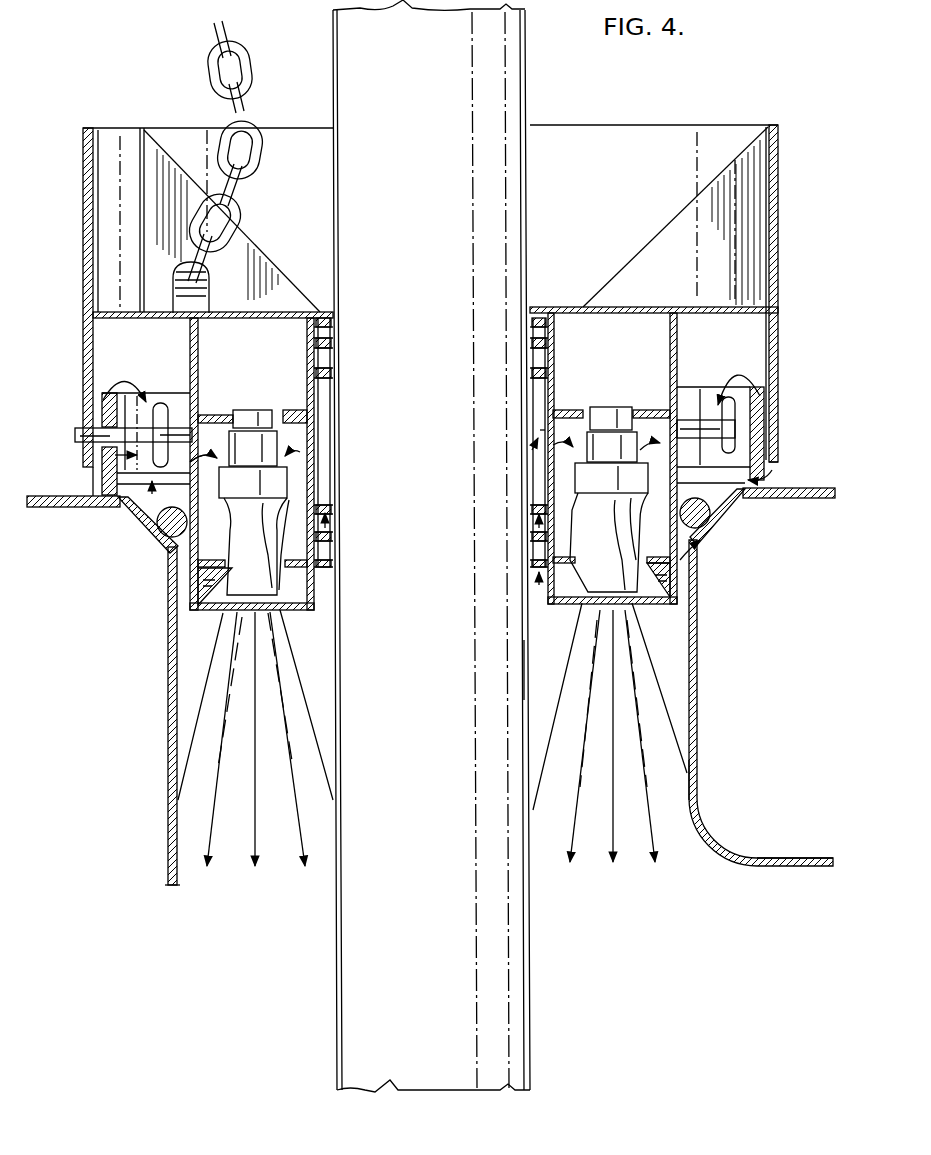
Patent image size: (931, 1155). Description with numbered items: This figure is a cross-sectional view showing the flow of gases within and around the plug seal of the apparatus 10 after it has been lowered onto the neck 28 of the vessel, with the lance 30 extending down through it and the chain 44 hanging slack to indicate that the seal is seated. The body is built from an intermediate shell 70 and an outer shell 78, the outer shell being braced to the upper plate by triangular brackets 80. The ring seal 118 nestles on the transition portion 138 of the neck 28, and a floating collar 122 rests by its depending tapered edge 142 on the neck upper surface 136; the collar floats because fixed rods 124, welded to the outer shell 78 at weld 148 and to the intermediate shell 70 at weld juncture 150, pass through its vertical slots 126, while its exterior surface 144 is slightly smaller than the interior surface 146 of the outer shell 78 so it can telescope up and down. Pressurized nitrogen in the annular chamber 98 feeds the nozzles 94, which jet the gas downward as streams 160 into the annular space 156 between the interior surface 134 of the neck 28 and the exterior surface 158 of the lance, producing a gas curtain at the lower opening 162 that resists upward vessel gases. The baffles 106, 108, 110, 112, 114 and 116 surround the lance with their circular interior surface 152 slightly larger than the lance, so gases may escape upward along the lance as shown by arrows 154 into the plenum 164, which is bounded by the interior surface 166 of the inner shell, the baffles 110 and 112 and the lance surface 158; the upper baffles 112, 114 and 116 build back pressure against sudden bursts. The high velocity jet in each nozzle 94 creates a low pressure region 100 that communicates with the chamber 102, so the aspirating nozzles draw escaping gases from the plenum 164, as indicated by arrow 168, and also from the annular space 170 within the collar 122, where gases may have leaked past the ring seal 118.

The pipe cleaning apparatus 10 is at (62, 262).
The neck 28 is at (158, 658).
The lance 30 is at (510, 98).
The chain 44 is at (246, 50).
The intermediate shell 70 is at (200, 372).
The outer shell 78 is at (776, 212).
The triangular bracket 80 is at (692, 215).
The nozzle 94 is at (620, 494).
The annular chamber 98 is at (650, 330).
The low pressure region 100 is at (620, 443).
The chamber 102 is at (215, 540).
The baffle 106 is at (318, 568).
The baffle 108 is at (322, 537).
The baffle 110 is at (320, 502).
The baffle 112 is at (323, 383).
The baffle 114 is at (324, 353).
The baffle 116 is at (322, 325).
The ring seal 118 is at (165, 527).
The floating collar 122 is at (768, 434).
The rod 124 is at (75, 442).
The slot 126 is at (102, 412).
The interior surface of the neck 134 is at (690, 638).
The neck upper surface 136 is at (62, 497).
The transition portion 138 is at (705, 522).
The tapered edge 142 is at (100, 498).
The exterior surface of the collar 144 is at (766, 393).
The interior surface of the outer shell 146 is at (768, 320).
The weld 148 is at (100, 428).
The weld juncture 150 is at (190, 414).
The circular interior surface 152 is at (548, 380).
The arrows 154 is at (530, 546).
The annular space 156 is at (647, 728).
The exterior surface of the lance 158 is at (528, 672).
The downwardly directed streams 160 is at (650, 795).
The lower opening 162 is at (705, 847).
The plenum 164 is at (540, 423).
The interior surface of the inner shell 166 is at (547, 400).
The arrow 168 is at (535, 447).
The annular space 170 is at (702, 400).